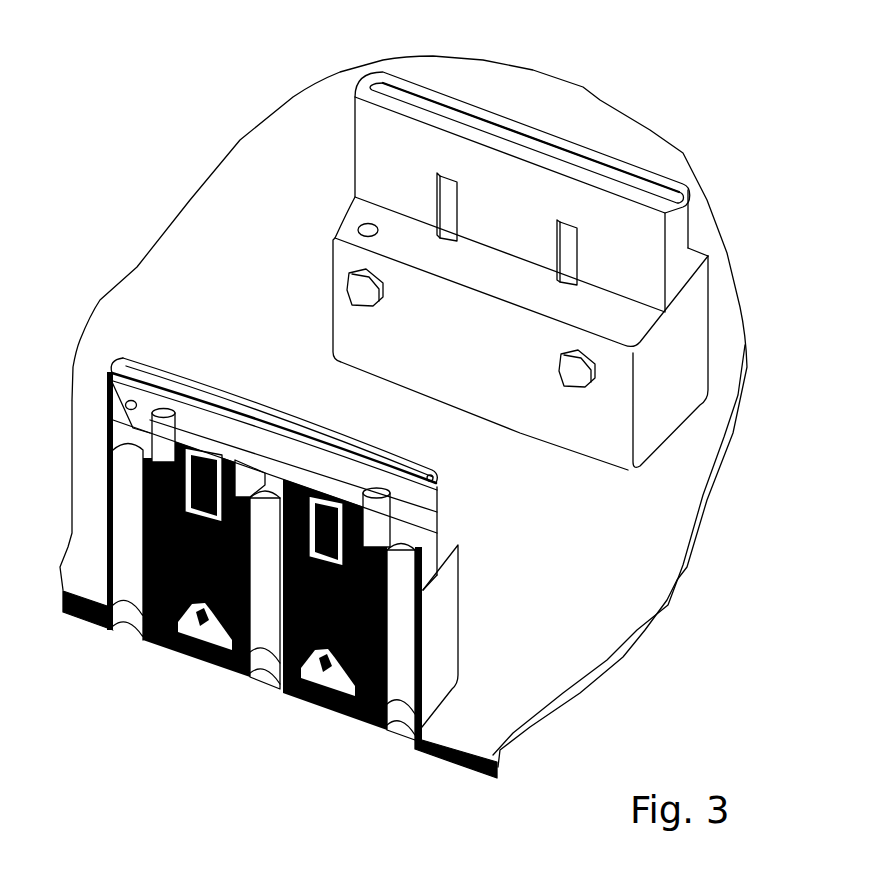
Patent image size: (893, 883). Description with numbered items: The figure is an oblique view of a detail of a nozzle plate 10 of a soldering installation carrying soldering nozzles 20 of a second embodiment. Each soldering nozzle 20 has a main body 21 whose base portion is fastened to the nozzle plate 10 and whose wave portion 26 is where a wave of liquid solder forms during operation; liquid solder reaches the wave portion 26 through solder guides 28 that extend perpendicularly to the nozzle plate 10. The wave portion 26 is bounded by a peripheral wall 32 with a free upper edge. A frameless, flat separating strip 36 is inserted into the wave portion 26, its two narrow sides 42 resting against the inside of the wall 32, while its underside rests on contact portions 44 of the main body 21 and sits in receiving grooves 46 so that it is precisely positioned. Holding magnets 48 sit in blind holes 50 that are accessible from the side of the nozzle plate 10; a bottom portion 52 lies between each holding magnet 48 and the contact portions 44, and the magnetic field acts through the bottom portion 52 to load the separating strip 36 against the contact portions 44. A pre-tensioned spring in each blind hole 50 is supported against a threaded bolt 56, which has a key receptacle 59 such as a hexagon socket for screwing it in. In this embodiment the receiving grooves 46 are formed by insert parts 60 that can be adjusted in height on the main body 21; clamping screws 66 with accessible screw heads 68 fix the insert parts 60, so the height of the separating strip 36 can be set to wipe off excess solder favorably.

The nozzle plate 10 is at (565, 628).
The soldering nozzle 20 is at (576, 338).
The main body 21 is at (694, 324).
The wave portion 26 is at (440, 500).
The solder guide 28 is at (263, 541).
The peripheral wall 32 is at (163, 378).
The separating strip 36 is at (622, 190).
The narrow side 42 is at (120, 380).
The contact portion 44 is at (200, 455).
The receiving groove 46 is at (185, 445).
The holding magnet 48 is at (435, 472).
The blind hole 50 is at (427, 480).
The bottom portion 52 is at (328, 493).
The threaded bolt 56 is at (163, 647).
The key receptacle 59 is at (193, 651).
The insert part 60 is at (158, 437).
The clamping screw 66 is at (145, 518).
The screw head 68 is at (560, 370).